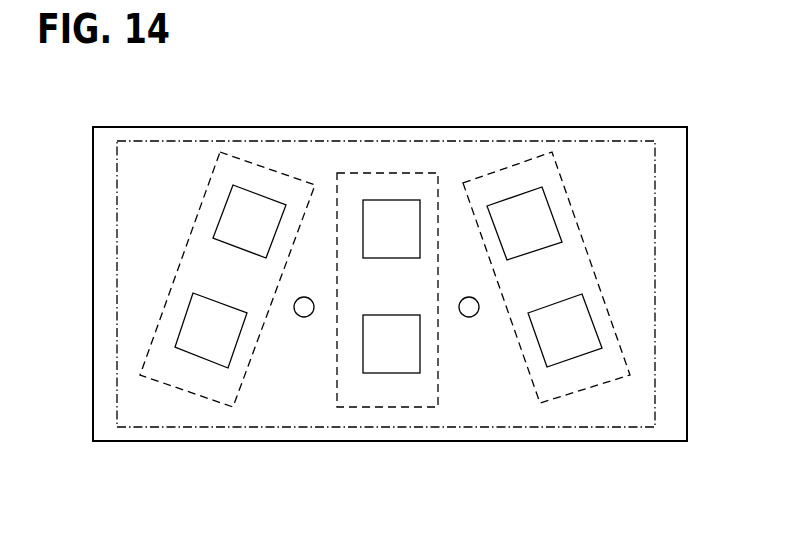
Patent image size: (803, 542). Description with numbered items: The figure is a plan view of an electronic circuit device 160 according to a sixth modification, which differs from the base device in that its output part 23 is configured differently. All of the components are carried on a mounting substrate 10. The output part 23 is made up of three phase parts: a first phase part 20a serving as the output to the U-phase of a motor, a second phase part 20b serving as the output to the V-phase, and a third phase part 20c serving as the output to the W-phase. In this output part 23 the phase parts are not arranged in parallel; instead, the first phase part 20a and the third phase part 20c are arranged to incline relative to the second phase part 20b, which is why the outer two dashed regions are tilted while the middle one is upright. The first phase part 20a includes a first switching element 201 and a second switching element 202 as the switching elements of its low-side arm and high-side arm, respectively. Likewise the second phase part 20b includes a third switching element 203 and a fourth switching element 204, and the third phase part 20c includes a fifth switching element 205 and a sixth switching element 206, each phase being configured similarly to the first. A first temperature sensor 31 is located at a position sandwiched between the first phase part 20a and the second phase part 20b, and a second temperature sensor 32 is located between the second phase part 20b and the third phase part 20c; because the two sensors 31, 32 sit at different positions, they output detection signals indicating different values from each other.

The electronic circuit device 160 is at (690, 108).
The mounting substrate 10 is at (643, 441).
The output part 23 is at (655, 278).
The first phase part 20a is at (213, 152).
The second phase part 20b is at (412, 172).
The third phase part 20c is at (553, 150).
The first switching element 201 is at (192, 354).
The second switching element 202 is at (222, 213).
The third switching element 203 is at (385, 373).
The fourth switching element 204 is at (375, 200).
The fifth switching element 205 is at (566, 360).
The sixth switching element 206 is at (502, 201).
The first temperature sensor 31 is at (302, 317).
The second temperature sensor 32 is at (468, 317).